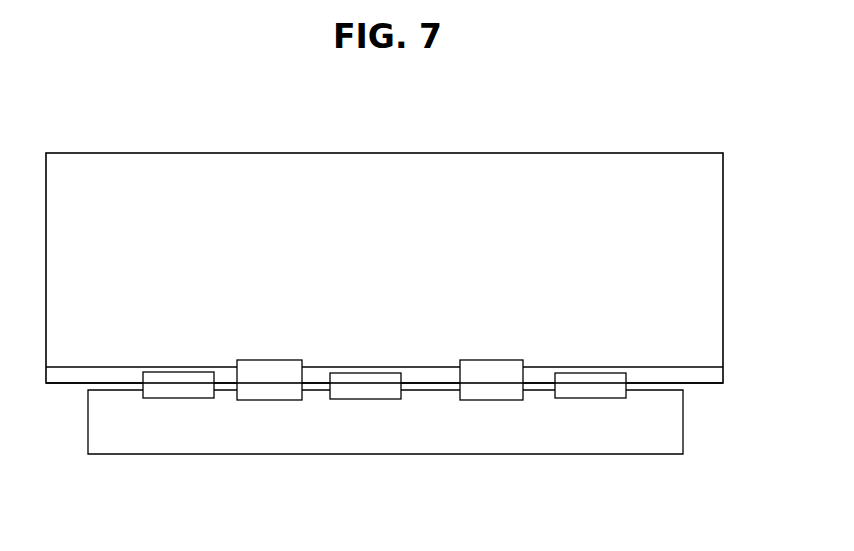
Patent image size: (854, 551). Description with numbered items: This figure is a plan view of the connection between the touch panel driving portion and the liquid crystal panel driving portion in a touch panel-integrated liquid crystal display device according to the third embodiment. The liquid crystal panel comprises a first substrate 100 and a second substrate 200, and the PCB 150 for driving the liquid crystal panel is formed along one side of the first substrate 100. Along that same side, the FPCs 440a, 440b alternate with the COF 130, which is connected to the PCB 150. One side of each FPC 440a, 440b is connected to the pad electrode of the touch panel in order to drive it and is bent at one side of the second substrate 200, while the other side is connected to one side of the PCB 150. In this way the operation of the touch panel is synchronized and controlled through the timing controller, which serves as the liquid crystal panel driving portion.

The first substrate 100 is at (724, 377).
The COF 130 is at (590, 373).
The PCB 150 is at (353, 437).
The second substrate 200 is at (702, 366).
The FPC 440a is at (266, 361).
The FPC 440b is at (490, 360).